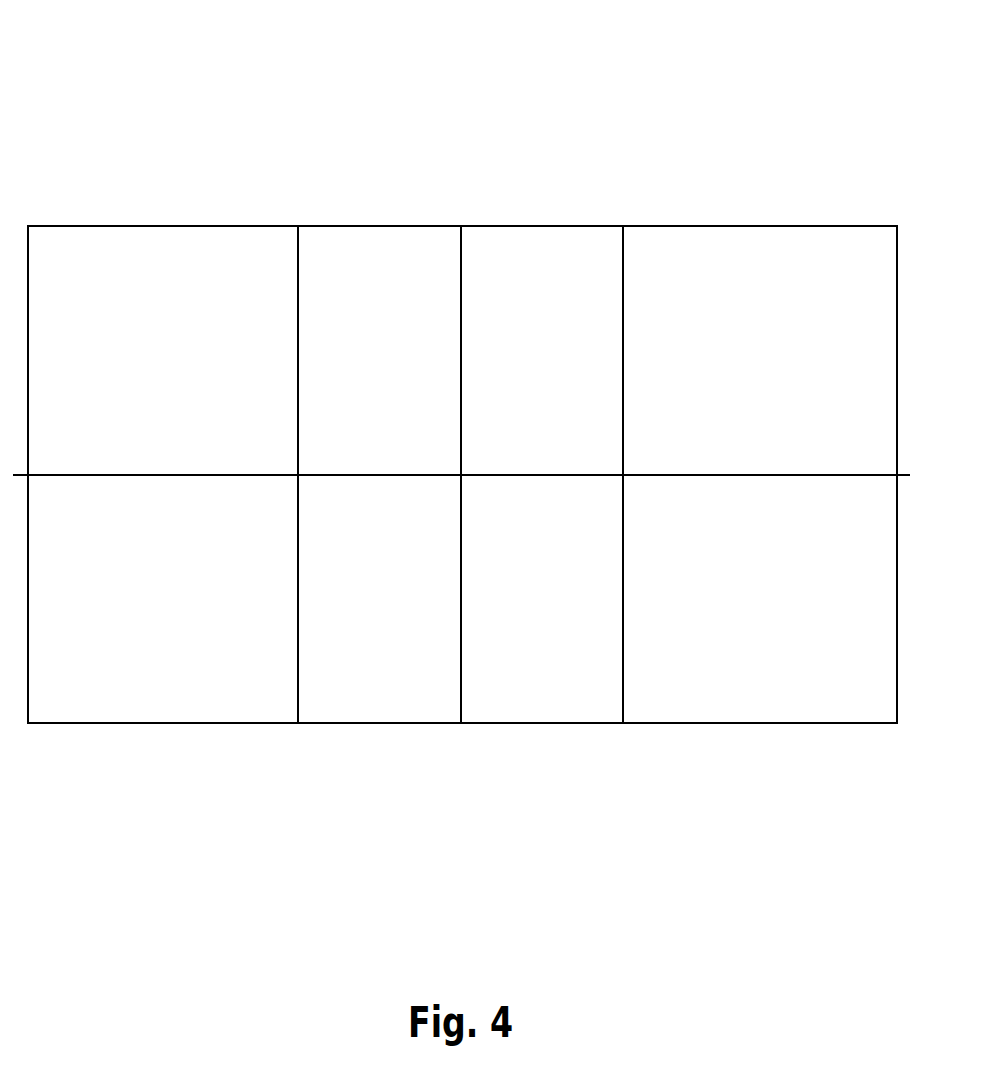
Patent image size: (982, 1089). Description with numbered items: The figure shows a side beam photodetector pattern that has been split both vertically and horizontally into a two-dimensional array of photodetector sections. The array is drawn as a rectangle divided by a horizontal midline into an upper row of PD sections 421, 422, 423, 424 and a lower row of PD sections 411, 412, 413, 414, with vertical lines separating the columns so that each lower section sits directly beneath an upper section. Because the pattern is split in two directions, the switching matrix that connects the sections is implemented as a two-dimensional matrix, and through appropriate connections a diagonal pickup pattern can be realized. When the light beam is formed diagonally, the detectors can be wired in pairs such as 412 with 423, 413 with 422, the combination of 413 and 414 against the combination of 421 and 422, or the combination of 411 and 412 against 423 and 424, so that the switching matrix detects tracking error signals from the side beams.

The PD section 411 is at (155, 715).
The PD section 412 is at (392, 715).
The PD section 413 is at (562, 715).
The PD section 414 is at (767, 715).
The PD section 421 is at (157, 226).
The PD section 422 is at (362, 226).
The PD section 423 is at (565, 226).
The PD section 424 is at (736, 226).